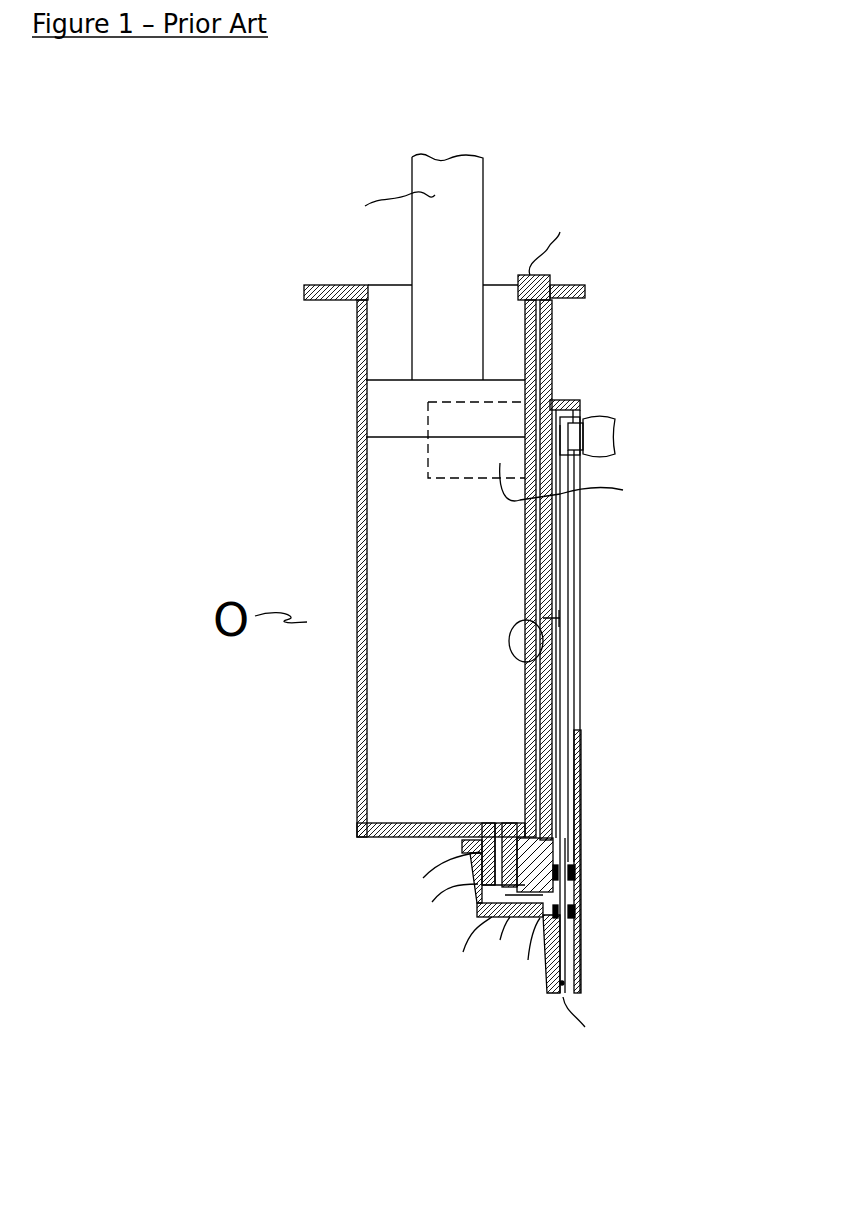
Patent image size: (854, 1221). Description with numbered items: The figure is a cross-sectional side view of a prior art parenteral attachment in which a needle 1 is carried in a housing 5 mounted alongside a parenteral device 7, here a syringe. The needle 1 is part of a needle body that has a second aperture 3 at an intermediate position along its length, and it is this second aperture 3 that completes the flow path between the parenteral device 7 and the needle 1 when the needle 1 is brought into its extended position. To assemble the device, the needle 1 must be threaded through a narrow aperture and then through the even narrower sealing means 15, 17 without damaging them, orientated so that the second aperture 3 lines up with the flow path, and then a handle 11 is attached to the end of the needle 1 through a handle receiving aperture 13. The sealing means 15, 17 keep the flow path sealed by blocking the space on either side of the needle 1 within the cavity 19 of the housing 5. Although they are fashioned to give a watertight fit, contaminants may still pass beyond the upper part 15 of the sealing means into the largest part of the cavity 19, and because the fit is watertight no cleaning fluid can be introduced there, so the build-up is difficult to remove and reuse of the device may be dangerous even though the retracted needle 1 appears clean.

The needle 1 is at (563, 562).
The second aperture 3 is at (520, 663).
The housing 5 is at (582, 750).
The parenteral device 7 is at (357, 480).
The handle 11 is at (720, 444).
The handle receiving aperture 13 is at (580, 417).
The upper sealing means 15 is at (580, 876).
The lower sealing means 17 is at (582, 908).
The cavity 19 is at (568, 535).